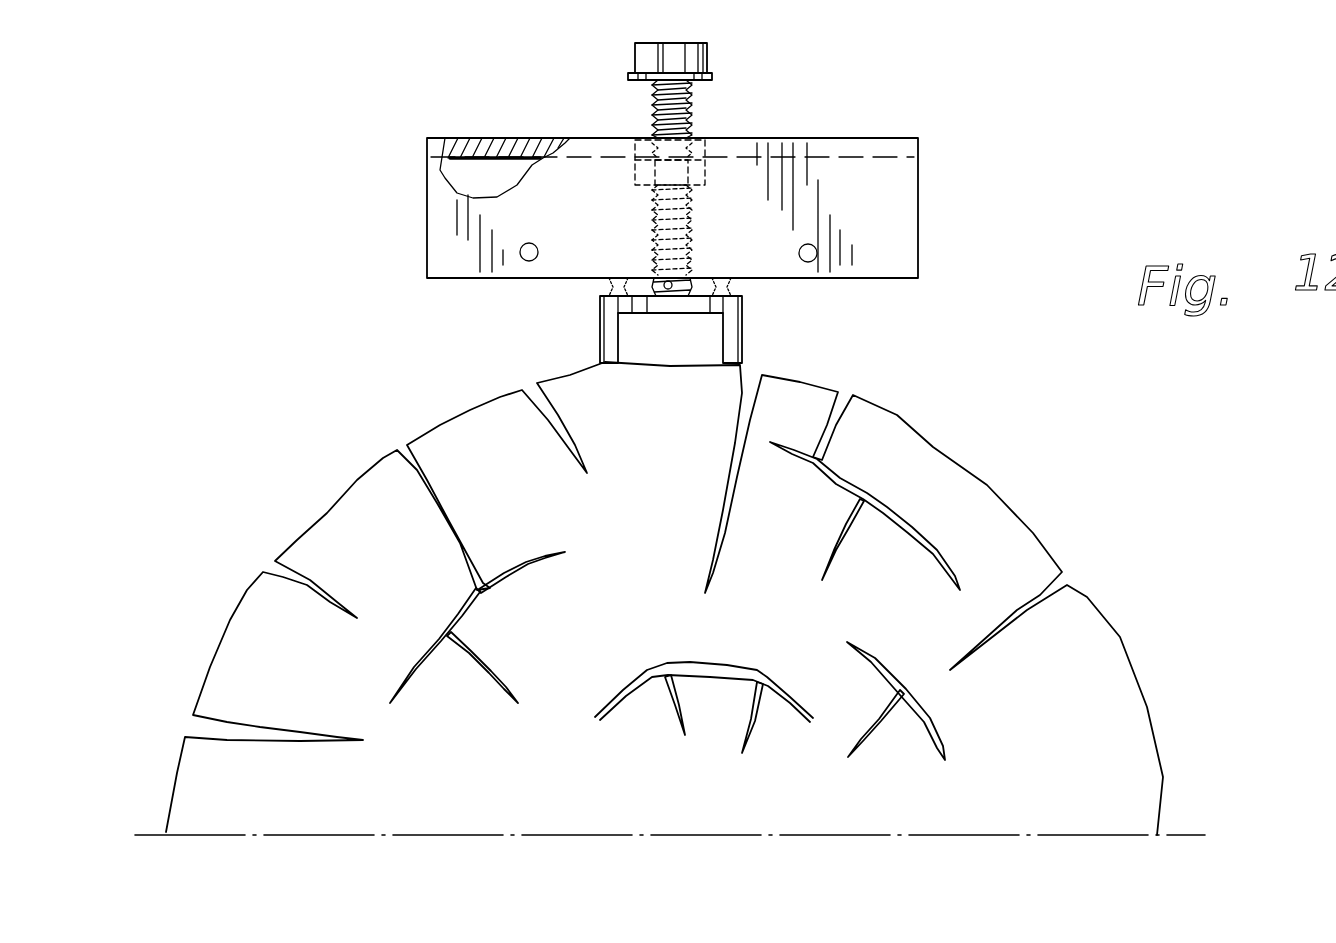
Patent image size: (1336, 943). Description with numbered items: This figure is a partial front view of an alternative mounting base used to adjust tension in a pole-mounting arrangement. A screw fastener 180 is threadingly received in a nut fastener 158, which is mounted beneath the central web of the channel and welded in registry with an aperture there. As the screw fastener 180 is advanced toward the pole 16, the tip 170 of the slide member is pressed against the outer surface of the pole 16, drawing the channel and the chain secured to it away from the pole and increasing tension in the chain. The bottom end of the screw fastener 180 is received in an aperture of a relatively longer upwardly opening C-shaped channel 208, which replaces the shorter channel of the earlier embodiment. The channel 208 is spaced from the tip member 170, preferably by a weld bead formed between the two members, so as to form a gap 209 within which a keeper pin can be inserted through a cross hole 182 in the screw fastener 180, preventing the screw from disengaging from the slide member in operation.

The pole 16 is at (910, 452).
The nut fastener 158 is at (707, 137).
The tip 170 is at (603, 340).
The screw fastener 180 is at (707, 60).
The cross hole 182 is at (693, 267).
The upwardly opening C-shaped channel 208 is at (467, 170).
The gap 209 is at (612, 285).